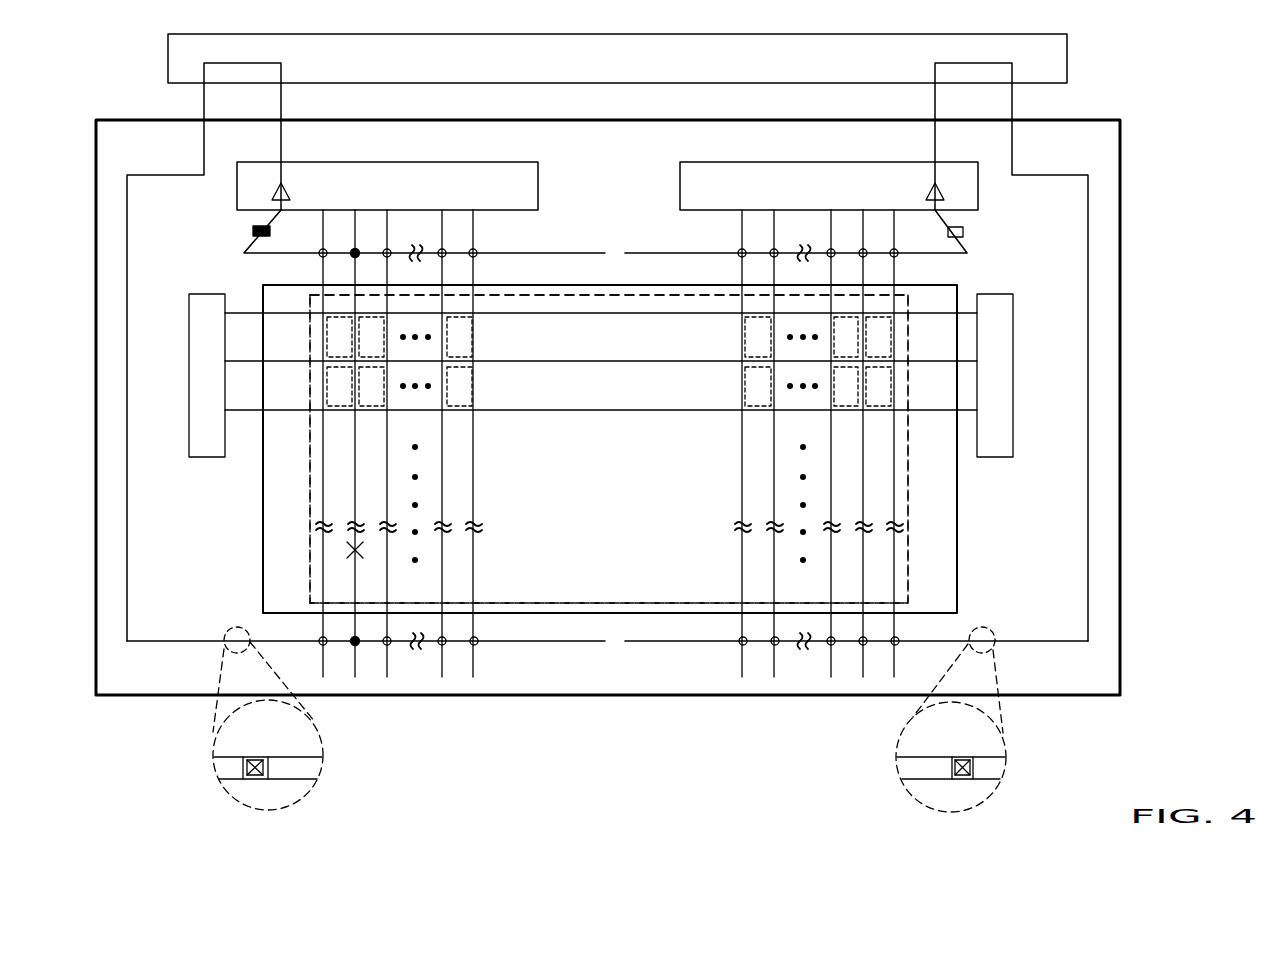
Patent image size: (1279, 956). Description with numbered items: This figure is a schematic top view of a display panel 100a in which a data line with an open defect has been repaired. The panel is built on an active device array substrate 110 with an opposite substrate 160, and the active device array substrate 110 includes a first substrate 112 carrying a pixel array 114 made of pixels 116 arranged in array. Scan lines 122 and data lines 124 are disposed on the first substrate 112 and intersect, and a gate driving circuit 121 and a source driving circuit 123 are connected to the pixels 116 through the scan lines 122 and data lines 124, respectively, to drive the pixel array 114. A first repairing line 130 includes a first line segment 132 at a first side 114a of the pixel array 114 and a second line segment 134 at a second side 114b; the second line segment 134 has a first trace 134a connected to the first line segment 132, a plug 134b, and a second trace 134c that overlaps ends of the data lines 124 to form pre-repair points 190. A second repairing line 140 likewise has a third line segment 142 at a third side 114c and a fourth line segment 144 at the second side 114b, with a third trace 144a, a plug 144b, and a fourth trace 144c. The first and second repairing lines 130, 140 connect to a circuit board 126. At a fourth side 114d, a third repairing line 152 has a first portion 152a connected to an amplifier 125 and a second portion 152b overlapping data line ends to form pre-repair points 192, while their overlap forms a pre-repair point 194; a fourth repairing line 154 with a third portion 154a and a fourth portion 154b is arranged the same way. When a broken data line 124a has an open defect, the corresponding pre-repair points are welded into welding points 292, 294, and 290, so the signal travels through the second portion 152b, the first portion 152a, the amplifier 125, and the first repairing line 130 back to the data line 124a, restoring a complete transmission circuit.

The display panel 100a is at (1205, 700).
The active device array substrate 110 is at (1120, 623).
The first substrate 112 is at (608, 691).
The pixel array 114 is at (606, 452).
The first side 114a is at (308, 488).
The second side 114b is at (553, 605).
The third side 114c is at (932, 471).
The fourth side 114d is at (552, 294).
The pixels 116 is at (327, 393).
The gate driving circuit 121 is at (205, 458).
The scan lines 122 is at (293, 314).
The source driving circuit 123 is at (237, 191).
The data lines 124 is at (609, 443).
The broken data line 124a is at (357, 500).
The amplifier 125 is at (290, 191).
The circuit board 126 is at (168, 60).
The first repairing line 130 is at (200, 733).
The first line segment 132 is at (127, 627).
The second line segment 134 is at (223, 740).
The first trace 134a is at (224, 788).
The plug 134b is at (257, 780).
The second trace 134c is at (288, 780).
The second repairing line 140 is at (1018, 733).
The third line segment 142 is at (1090, 627).
The fourth line segment 144 is at (995, 740).
The third trace 144a is at (998, 790).
The plug 144b is at (963, 780).
The fourth trace 144c is at (930, 780).
The third repairing line 152 is at (550, 247).
The first portion 152a is at (253, 232).
The second portion 152b is at (248, 256).
The fourth repairing line 154 is at (851, 245).
The third portion 154a is at (958, 220).
The fourth portion 154b is at (967, 253).
The opposite substrate 160 is at (957, 578).
The pre-repair points 190 is at (321, 650).
The pre-repair points 192 is at (326, 250).
The pre-repair point 194 is at (948, 232).
The welding point 290 is at (357, 647).
The welding point 292 is at (357, 249).
The welding point 294 is at (270, 231).